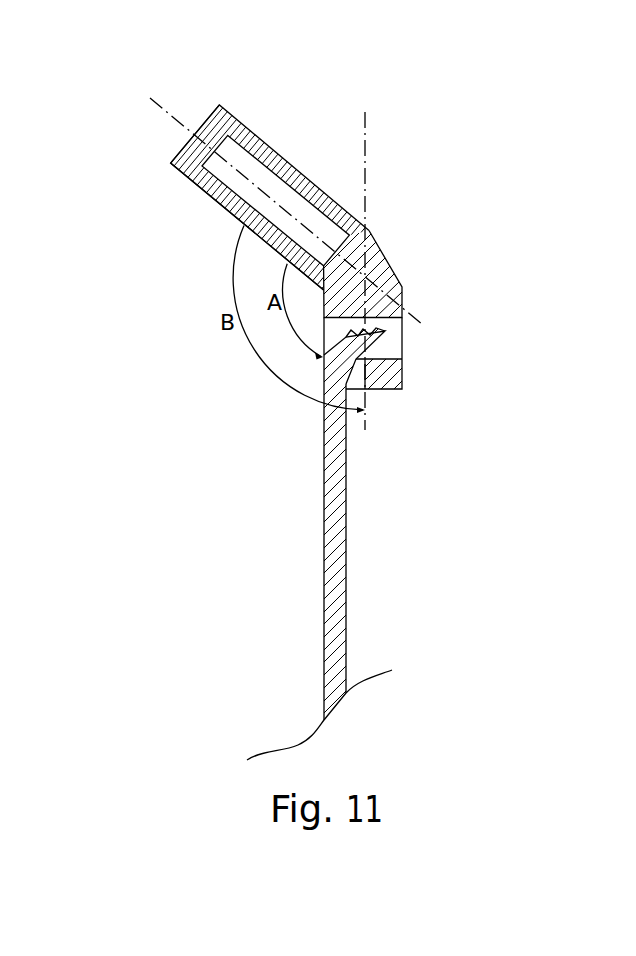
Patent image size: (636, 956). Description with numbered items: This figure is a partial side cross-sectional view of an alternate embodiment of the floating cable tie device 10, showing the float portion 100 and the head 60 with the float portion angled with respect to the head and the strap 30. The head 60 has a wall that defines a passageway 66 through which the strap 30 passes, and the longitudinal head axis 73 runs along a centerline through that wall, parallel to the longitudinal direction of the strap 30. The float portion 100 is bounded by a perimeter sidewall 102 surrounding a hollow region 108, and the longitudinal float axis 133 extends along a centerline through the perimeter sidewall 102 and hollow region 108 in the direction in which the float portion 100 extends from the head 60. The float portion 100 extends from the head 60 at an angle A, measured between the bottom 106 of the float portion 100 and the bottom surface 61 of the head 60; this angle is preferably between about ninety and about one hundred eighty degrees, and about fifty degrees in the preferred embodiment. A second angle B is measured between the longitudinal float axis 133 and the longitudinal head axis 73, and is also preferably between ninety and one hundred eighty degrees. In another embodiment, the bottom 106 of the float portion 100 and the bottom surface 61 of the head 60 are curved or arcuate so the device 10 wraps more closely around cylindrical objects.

The floating cable tie device 10 is at (513, 125).
The strap 30 is at (337, 539).
The head 60 is at (398, 375).
The bottom surface of head 61 is at (323, 354).
The passageway 66 is at (392, 350).
The longitudinal head axis 73 is at (152, 98).
The float portion 100 is at (233, 167).
The perimeter sidewall 102 is at (178, 147).
The bottom of float portion 106 is at (220, 190).
The hollow region 108 is at (263, 172).
The longitudinal float axis 133 is at (366, 128).